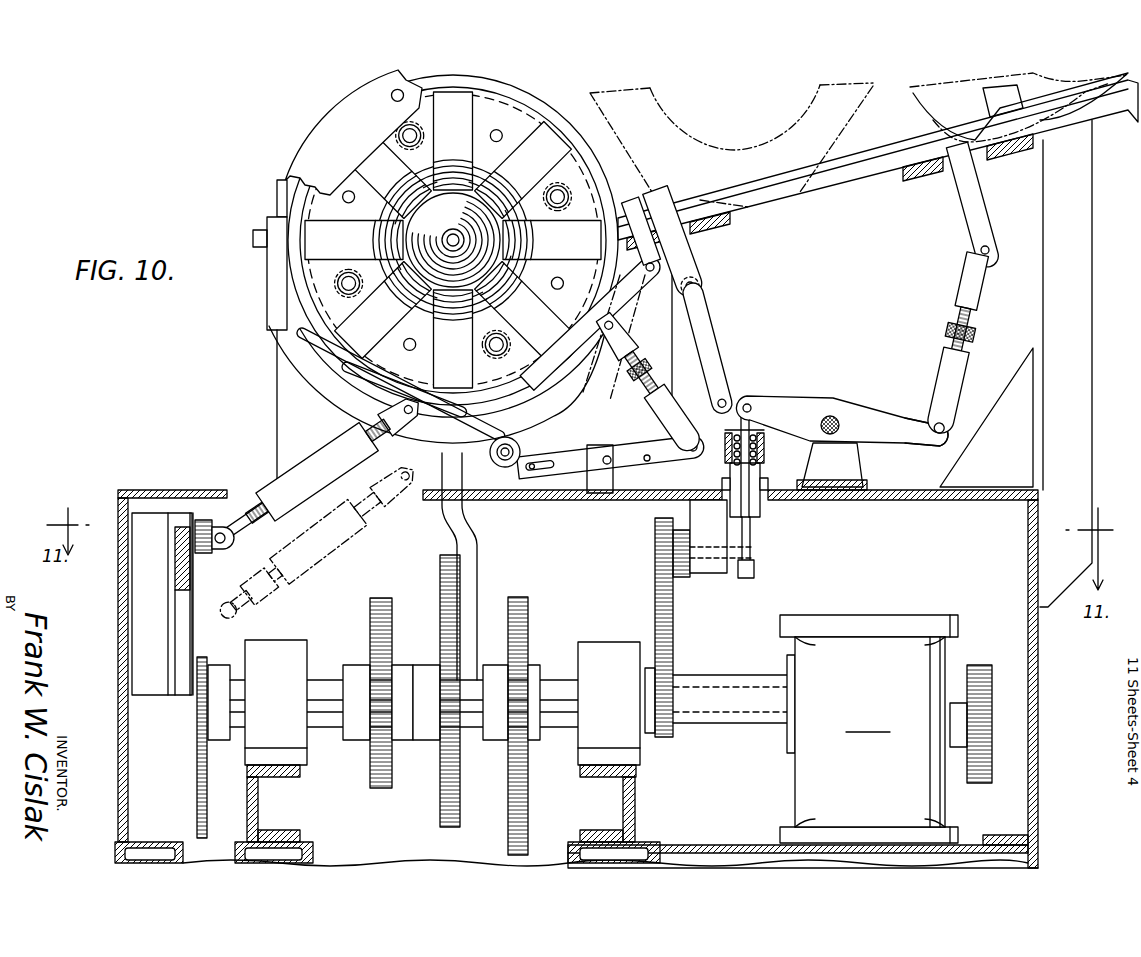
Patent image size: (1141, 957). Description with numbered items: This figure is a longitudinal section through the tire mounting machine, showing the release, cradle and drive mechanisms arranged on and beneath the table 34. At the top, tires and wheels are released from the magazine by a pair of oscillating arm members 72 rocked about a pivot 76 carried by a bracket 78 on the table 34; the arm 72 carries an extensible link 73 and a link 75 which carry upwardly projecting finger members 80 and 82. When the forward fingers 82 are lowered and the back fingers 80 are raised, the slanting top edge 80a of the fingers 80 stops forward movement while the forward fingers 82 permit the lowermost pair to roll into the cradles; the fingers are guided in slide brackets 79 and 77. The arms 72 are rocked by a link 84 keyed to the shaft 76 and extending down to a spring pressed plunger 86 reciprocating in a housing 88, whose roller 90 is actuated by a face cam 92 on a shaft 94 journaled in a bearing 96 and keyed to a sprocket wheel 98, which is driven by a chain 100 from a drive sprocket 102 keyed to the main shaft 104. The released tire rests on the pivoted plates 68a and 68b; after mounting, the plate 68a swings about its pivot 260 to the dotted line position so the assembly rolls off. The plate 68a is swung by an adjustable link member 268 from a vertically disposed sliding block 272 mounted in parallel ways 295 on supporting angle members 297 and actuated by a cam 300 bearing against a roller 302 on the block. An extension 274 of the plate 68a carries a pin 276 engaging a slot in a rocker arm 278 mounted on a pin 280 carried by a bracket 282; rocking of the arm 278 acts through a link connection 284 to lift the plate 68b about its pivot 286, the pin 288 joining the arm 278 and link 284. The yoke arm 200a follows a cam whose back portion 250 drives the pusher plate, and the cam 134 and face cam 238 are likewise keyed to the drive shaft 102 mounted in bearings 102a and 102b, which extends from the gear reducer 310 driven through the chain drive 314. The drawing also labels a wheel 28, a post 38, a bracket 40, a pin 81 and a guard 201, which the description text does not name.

The turret wheel 28 is at (523, 110).
The table 34 is at (160, 488).
The support post 38 is at (672, 318).
The bracket 40 is at (1045, 433).
The pivoted plate 68a is at (320, 343).
The pivoted plate 68b is at (540, 375).
The oscillating arm member 72 is at (866, 420).
The extensible link 73 is at (948, 362).
The link 75 is at (712, 338).
The pivot 76 is at (830, 417).
The slide bracket 77 is at (703, 247).
The bracket 78 is at (845, 490).
The slide bracket 79 is at (948, 188).
The finger member 80 is at (970, 214).
The slanting top edge 80a is at (958, 150).
The pivot pin 81 is at (980, 253).
The finger member 82 is at (672, 195).
The link 84 is at (783, 403).
The plunger 86 is at (764, 447).
The housing 88 is at (779, 490).
The roller 90 is at (752, 520).
The face cam 92 is at (754, 575).
The shaft 94 is at (717, 560).
The bearing 96 is at (702, 572).
The sprocket wheel 98 is at (655, 537).
The chain 100 is at (657, 603).
The drive sprocket 102 is at (672, 668).
The bearing 102a is at (288, 650).
The bearing 102b is at (594, 647).
The main shaft 104 is at (730, 713).
The cam 134 is at (528, 820).
The arm 200a is at (478, 547).
The guard 201 is at (277, 277).
The face cam 238 is at (378, 790).
The back portion 250 is at (443, 820).
The pivot 260 is at (505, 460).
The adjustable link member 268 is at (297, 508).
The sliding block 272 is at (175, 573).
The extension 274 is at (530, 453).
The pin 276 is at (540, 474).
The rocker arm 278 is at (647, 461).
The pin 280 is at (607, 466).
The bracket 282 is at (620, 442).
The link connection 284 is at (658, 358).
The pivot 286 is at (624, 197).
The pin 288 is at (690, 452).
The parallel ways 295 is at (178, 690).
The supporting angle member 297 is at (140, 683).
The cam 300 is at (200, 798).
The roller 302 is at (203, 522).
The gear reducer 310 is at (869, 729).
The chain drive 314 is at (978, 677).